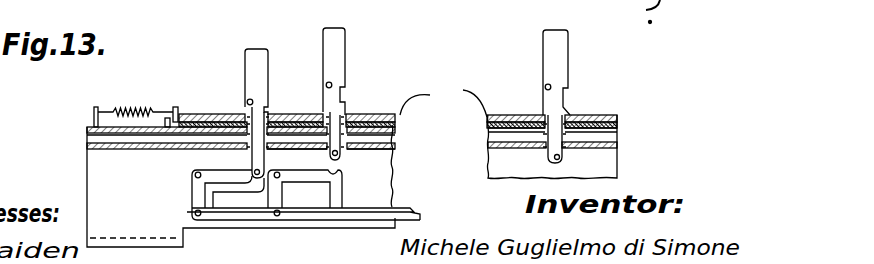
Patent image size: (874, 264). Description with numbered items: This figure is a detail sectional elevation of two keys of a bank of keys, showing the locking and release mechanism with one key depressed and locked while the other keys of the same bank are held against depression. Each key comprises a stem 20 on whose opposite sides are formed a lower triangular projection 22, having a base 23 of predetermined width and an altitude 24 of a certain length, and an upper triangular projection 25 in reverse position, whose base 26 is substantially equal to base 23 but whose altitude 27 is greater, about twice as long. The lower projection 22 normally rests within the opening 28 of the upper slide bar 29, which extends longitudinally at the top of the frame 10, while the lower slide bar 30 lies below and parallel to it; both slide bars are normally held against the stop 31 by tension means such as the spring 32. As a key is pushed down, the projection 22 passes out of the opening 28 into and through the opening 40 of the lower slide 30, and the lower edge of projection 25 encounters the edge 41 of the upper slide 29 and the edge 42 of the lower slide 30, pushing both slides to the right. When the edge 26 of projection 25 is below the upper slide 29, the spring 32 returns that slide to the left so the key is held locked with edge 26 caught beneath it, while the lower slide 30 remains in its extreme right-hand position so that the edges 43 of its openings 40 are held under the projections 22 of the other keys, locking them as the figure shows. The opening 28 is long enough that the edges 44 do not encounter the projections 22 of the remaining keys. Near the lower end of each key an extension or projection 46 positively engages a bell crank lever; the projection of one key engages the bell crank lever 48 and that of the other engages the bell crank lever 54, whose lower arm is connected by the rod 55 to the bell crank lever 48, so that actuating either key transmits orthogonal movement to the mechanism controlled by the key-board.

The frame 10 is at (490, 166).
The stem 20 is at (265, 38).
The lower triangular projection 22 is at (243, 124).
The base 23 is at (543, 131).
The altitude 24 is at (570, 146).
The upper triangular projection 25 is at (270, 112).
The base 26 is at (563, 108).
The altitude 27 is at (560, 115).
The opening 28 is at (247, 115).
The upper slide bar 29 is at (443, 101).
The lower slide bar 30 is at (485, 130).
The stop 31 is at (157, 132).
The spring 32 is at (132, 110).
The opening 40 is at (363, 151).
The edge 41 is at (352, 116).
The edge 42 is at (620, 133).
The edges 43 is at (320, 140).
The edges 44 is at (495, 115).
The extension or projection 46 is at (318, 189).
The bell crank lever 48 is at (270, 192).
The bell crank lever 54 is at (196, 189).
The rod 55 is at (420, 211).